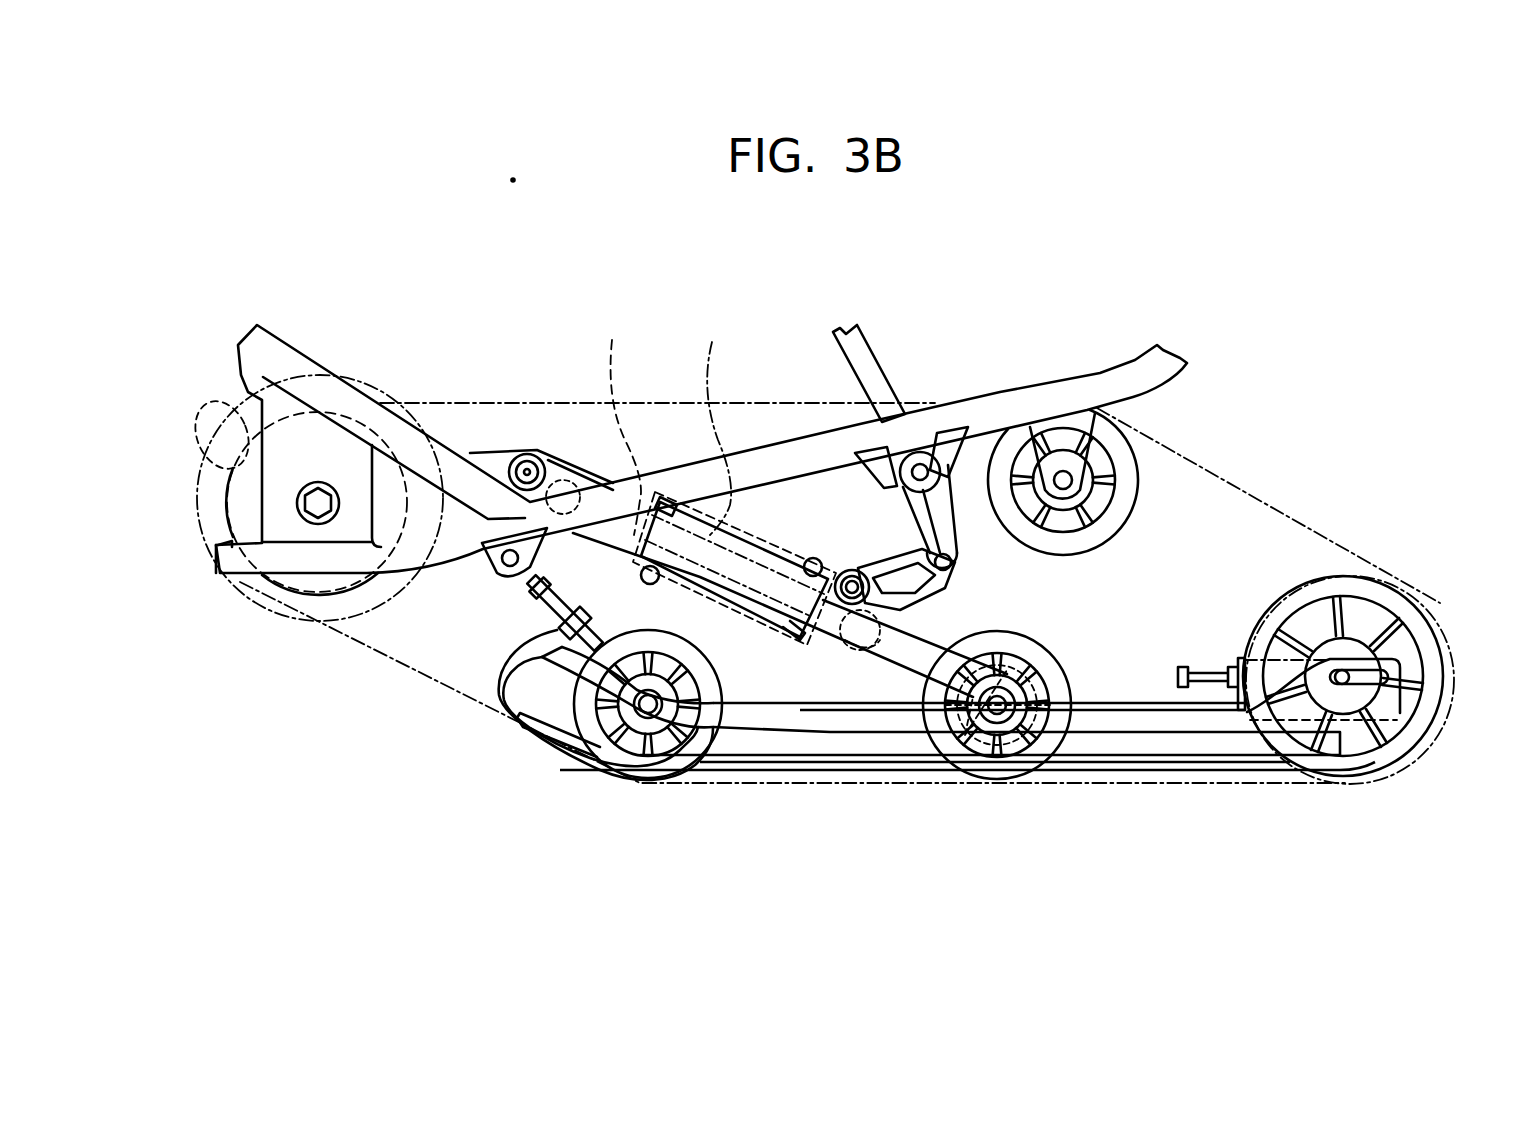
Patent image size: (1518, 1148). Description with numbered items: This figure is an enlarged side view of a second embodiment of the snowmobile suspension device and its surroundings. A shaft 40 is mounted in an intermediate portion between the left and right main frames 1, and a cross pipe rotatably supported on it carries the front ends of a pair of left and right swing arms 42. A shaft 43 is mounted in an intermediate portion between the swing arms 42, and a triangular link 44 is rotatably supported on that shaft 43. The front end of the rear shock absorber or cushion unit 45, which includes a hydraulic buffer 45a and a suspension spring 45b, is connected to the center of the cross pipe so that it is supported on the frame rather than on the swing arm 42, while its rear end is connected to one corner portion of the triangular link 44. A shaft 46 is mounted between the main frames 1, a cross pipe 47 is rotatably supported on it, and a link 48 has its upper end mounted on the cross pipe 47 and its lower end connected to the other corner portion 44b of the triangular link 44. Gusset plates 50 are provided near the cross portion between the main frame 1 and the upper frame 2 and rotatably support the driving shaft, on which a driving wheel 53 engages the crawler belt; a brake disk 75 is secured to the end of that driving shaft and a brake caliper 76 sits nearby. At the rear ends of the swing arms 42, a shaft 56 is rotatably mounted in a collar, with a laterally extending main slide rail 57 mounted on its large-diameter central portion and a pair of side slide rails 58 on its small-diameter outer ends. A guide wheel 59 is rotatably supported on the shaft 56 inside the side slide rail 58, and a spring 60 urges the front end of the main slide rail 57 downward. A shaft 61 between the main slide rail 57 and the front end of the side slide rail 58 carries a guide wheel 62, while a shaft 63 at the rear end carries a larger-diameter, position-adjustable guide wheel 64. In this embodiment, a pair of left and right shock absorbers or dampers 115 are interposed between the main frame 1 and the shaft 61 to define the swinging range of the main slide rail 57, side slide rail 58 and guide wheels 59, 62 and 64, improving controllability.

The main frame 1 is at (235, 565).
The upper frame 2 is at (270, 345).
The shaft 40 is at (518, 458).
The swing arm 42 is at (795, 645).
The shaft 43 is at (850, 570).
The triangular link 44 is at (905, 570).
The corner portion 44b is at (965, 553).
The rear shock absorber or cushion unit 45 is at (748, 566).
The hydraulic buffer 45a is at (620, 422).
The suspension spring 45b is at (713, 422).
The shaft 46 is at (912, 378).
The cross pipe 47 is at (930, 465).
The link 48 is at (957, 550).
The gusset plate 50 is at (300, 385).
The driving wheel 53 is at (320, 595).
The shaft 56 is at (985, 720).
The main slide rail 57 is at (552, 700).
The side slide rail 58 is at (1236, 745).
The guide wheel 59 is at (1010, 775).
The spring 60 is at (945, 652).
The shaft 61 is at (650, 720).
The guide wheel 62 is at (592, 742).
The shaft 63 is at (1355, 678).
The guide wheel 64 is at (1382, 792).
The brake disk 75 is at (390, 620).
The brake caliper 76 is at (210, 408).
The shock absorber or damper 115 is at (500, 653).